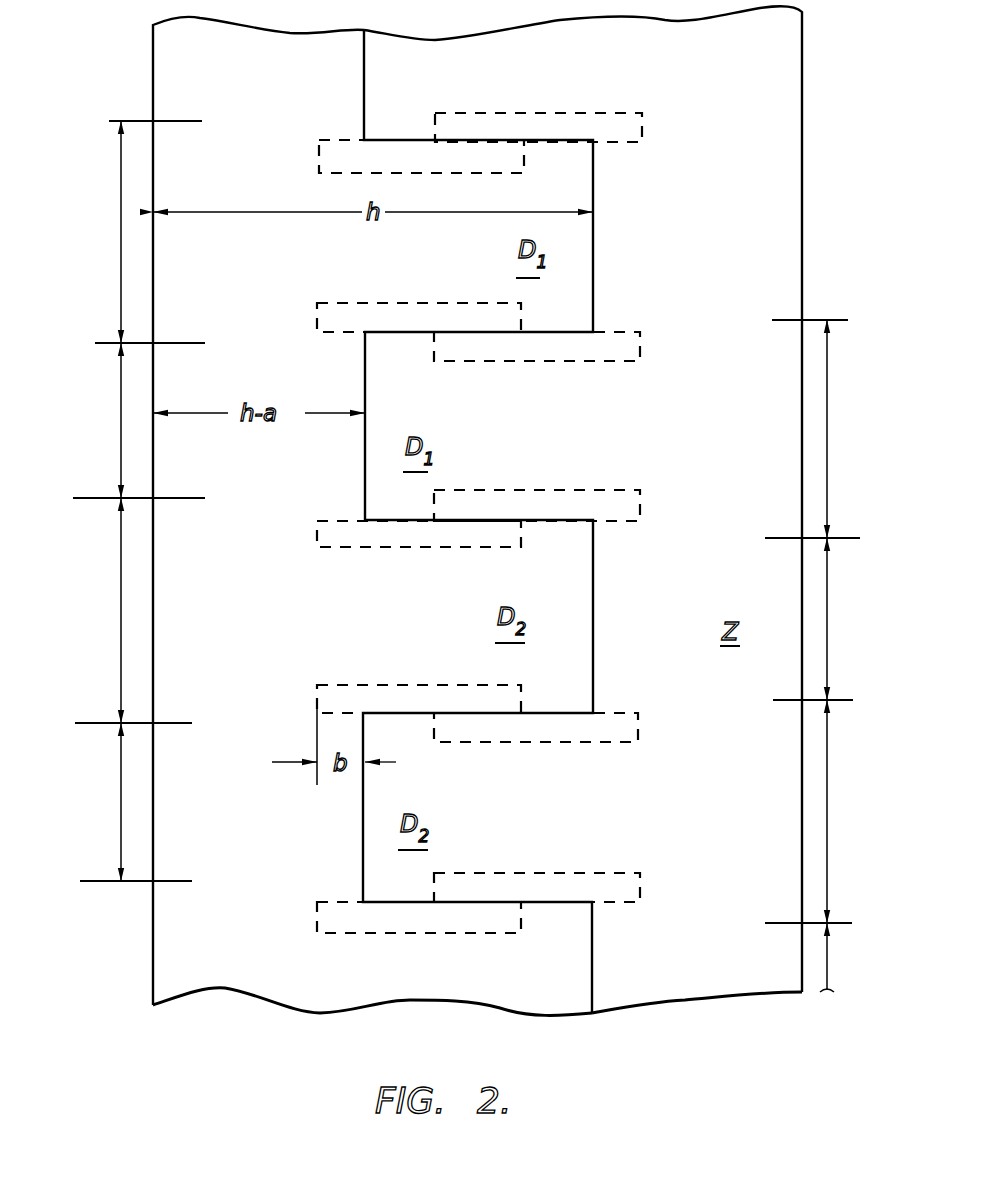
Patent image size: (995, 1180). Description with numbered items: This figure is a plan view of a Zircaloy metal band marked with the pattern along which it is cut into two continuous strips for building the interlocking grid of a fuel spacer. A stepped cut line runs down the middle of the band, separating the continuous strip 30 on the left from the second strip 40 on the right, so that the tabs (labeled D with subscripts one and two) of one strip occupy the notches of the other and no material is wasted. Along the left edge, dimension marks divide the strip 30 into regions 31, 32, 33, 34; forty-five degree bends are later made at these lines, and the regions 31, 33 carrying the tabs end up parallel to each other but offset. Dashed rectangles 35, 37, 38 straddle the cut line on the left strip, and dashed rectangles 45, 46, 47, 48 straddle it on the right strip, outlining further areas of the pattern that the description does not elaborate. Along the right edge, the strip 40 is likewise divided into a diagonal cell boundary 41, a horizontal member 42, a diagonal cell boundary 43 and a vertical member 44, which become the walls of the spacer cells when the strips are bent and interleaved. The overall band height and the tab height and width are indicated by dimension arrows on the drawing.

The continuous strip 30 is at (258, 293).
The second strip member 40 is at (728, 272).
The region 31 is at (121, 225).
The region 32 is at (121, 432).
The region 33 is at (121, 604).
The region 34 is at (121, 801).
The heater/weld region of first strip member 35 is at (318, 154).
The heater/weld region of first strip member 37 is at (317, 543).
The heater/weld region of first strip member 38 is at (317, 699).
The diagonal cell boundary 41 is at (827, 426).
The horizontal member 42 is at (827, 630).
The diagonal cell boundary 43 is at (827, 814).
The vertical member 44 is at (827, 975).
The heater/weld region of second strip member 45 is at (642, 349).
The heater/weld region of second strip member 46 is at (642, 505).
The heater/weld region of second strip member 47 is at (640, 728).
The heater/weld region of second strip member 48 is at (642, 893).